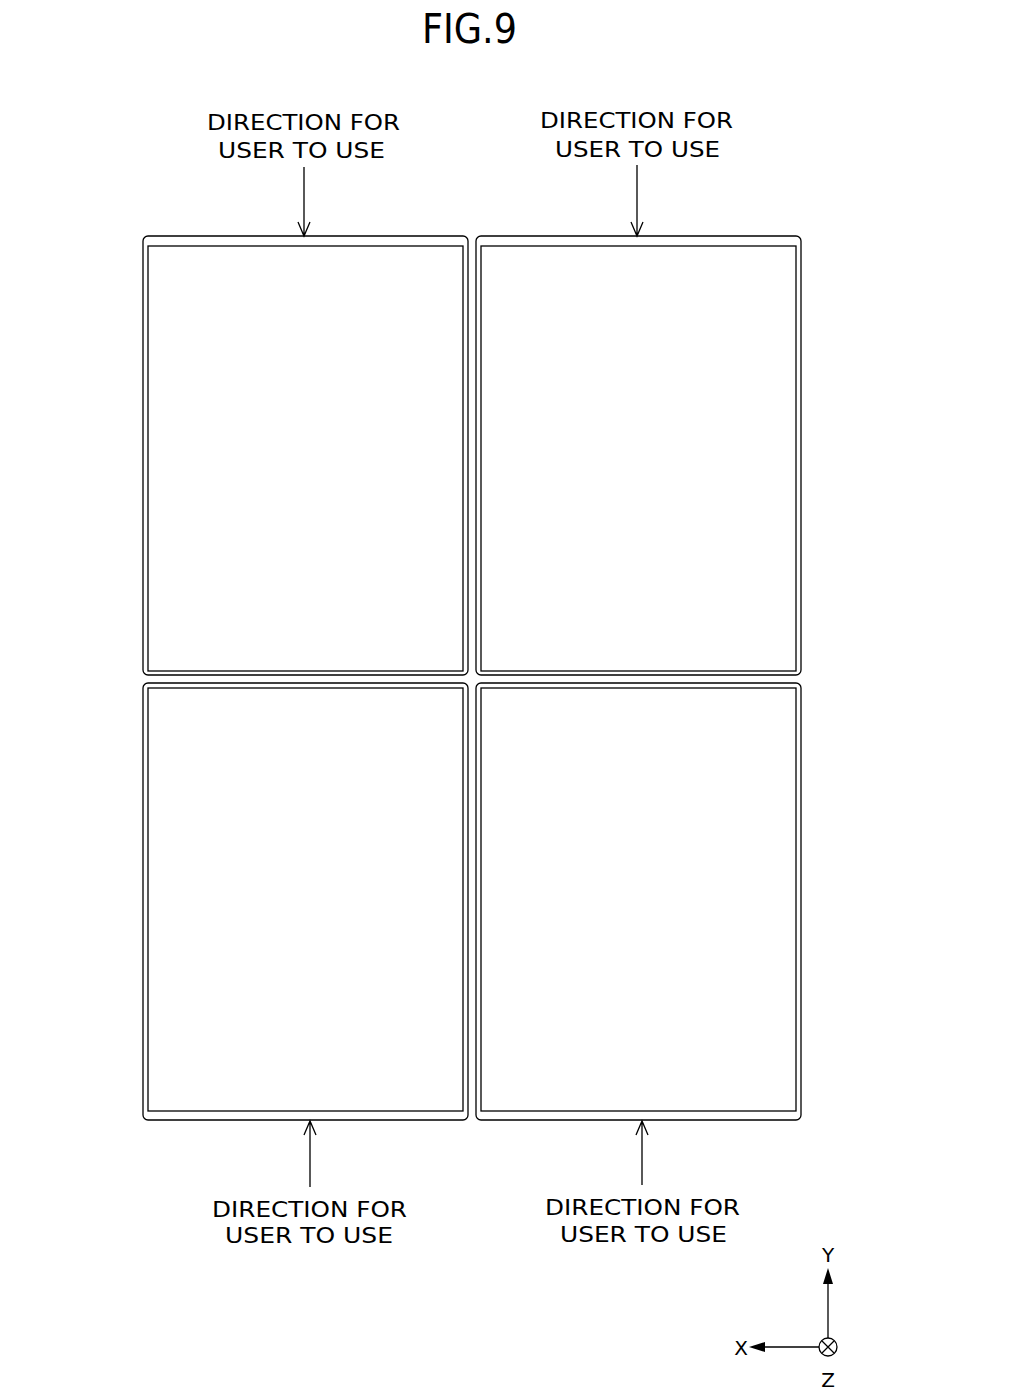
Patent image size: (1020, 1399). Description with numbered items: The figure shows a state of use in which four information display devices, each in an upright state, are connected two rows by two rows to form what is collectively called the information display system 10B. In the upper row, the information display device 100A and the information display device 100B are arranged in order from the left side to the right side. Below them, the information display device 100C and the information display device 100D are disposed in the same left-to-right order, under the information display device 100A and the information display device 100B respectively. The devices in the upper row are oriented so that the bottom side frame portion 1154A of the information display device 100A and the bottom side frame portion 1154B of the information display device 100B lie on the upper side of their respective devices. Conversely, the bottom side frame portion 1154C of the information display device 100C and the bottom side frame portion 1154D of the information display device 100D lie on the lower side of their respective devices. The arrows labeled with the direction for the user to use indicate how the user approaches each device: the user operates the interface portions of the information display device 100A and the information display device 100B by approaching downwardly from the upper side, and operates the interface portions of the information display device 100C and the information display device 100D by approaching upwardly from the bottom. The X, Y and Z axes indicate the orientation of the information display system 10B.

The information display system 10B is at (142, 101).
The information display device 100A is at (260, 429).
The information display device 100B is at (684, 429).
The information display device 100C is at (261, 930).
The information display device 100D is at (688, 930).
The bottom side frame portion 1154A is at (392, 246).
The bottom side frame portion 1154B is at (731, 246).
The bottom side frame portion 1154C is at (400, 1111).
The bottom side frame portion 1154D is at (738, 1111).